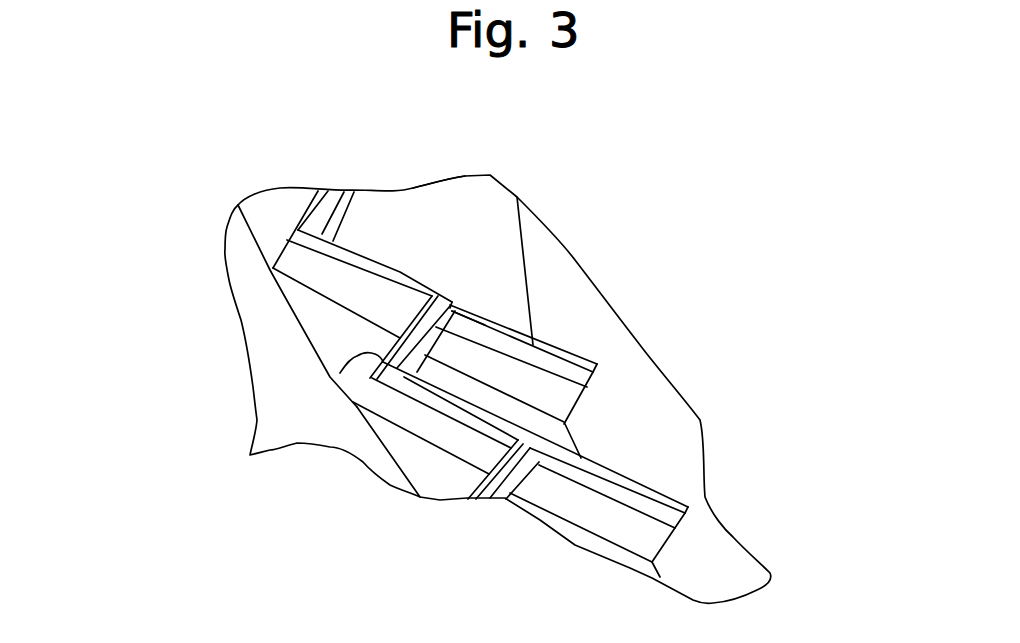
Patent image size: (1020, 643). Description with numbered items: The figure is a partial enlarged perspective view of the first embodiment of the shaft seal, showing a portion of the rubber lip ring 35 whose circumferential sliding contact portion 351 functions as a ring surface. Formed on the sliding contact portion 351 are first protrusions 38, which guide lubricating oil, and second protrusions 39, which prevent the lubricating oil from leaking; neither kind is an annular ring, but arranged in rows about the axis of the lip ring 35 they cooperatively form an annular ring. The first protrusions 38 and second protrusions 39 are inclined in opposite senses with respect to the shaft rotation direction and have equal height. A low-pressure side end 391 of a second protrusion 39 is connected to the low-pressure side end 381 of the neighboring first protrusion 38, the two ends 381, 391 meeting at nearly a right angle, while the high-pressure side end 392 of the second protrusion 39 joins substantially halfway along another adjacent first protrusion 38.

The lip ring 35 is at (578, 162).
The sliding contact portion 351 is at (435, 187).
The first protrusion 38 is at (566, 366).
The low-pressure side end of the first protrusion 381 is at (290, 262).
The second protrusion 39 is at (337, 194).
The low-pressure side end of the second protrusion 391 is at (336, 377).
The high-pressure side end of the second protrusion 392 is at (466, 312).